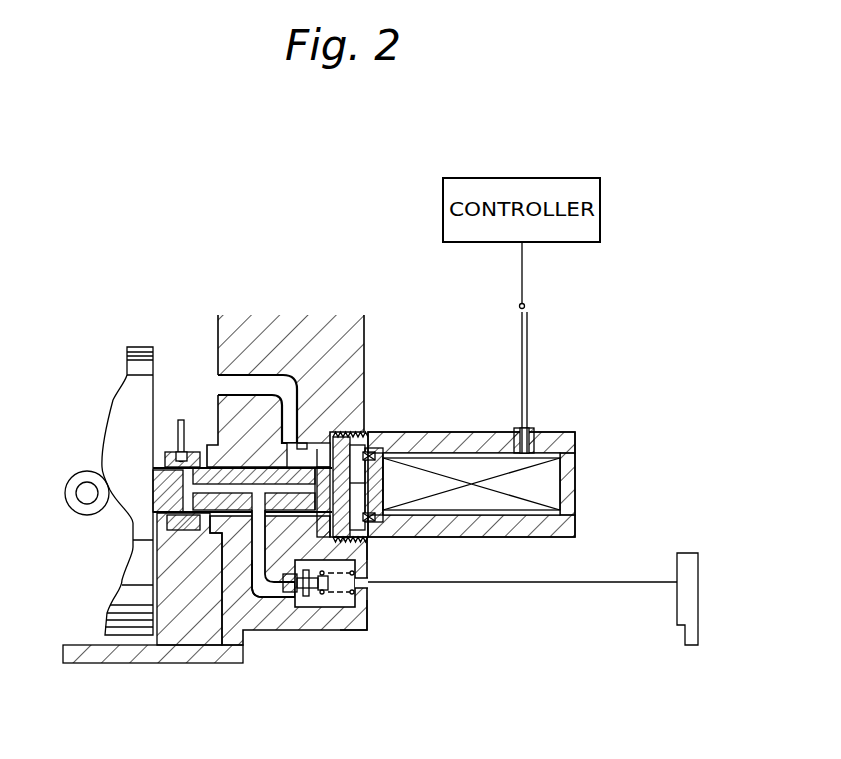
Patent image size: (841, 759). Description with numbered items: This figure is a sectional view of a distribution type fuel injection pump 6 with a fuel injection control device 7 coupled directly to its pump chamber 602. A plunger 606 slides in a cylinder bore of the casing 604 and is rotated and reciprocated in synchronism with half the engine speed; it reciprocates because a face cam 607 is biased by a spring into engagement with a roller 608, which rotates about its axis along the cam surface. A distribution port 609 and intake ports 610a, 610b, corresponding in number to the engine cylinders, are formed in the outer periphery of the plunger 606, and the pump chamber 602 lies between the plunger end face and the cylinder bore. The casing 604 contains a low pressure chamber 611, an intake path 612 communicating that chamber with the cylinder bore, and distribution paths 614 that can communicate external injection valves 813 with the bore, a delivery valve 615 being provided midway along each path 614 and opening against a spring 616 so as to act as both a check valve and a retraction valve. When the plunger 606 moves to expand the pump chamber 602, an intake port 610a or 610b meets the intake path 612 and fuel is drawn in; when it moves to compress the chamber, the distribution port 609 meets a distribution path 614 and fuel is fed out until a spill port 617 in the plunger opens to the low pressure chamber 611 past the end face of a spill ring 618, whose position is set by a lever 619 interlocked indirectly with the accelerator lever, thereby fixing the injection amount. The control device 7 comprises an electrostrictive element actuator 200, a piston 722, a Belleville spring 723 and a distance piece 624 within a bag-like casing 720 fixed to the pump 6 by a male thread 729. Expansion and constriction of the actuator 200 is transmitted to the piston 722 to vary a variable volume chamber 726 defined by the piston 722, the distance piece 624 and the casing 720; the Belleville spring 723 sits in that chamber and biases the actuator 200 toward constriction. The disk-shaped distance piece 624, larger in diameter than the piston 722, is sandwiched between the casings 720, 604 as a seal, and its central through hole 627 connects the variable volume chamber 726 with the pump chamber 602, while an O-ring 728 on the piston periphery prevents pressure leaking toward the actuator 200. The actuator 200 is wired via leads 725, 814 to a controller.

The distribution type fuel injection pump 6 is at (221, 262).
The face cam 607 is at (138, 349).
The roller 608 is at (88, 516).
The lever 619 is at (177, 432).
The low pressure chamber 611 is at (187, 395).
The pump chamber 602 is at (338, 440).
The intake path 612 is at (247, 383).
The intake port 610b is at (302, 463).
The spill port 617 is at (182, 512).
The spill ring 618 is at (160, 545).
The plunger 606 is at (200, 540).
The casing 604 is at (89, 656).
The intake port 610a is at (339, 633).
The delivery valve 615 is at (220, 520).
The distribution path 614 is at (272, 588).
The distribution port 609 is at (288, 600).
The spring 616 is at (360, 633).
The distance piece 624 is at (368, 555).
The fuel injection control device 7 is at (580, 435).
The male thread 729 is at (375, 437).
The through hole 627 is at (370, 540).
The Belleville spring 723 is at (356, 470).
The O-ring 728 is at (413, 437).
The variable volume chamber 726 is at (400, 460).
The casing 720 is at (563, 507).
The electrostrictive element actuator 200 is at (553, 481).
The piston 722 is at (415, 490).
The lead wire 725 is at (527, 378).
The lead wire 814 is at (537, 583).
The injection valve 813 is at (680, 607).